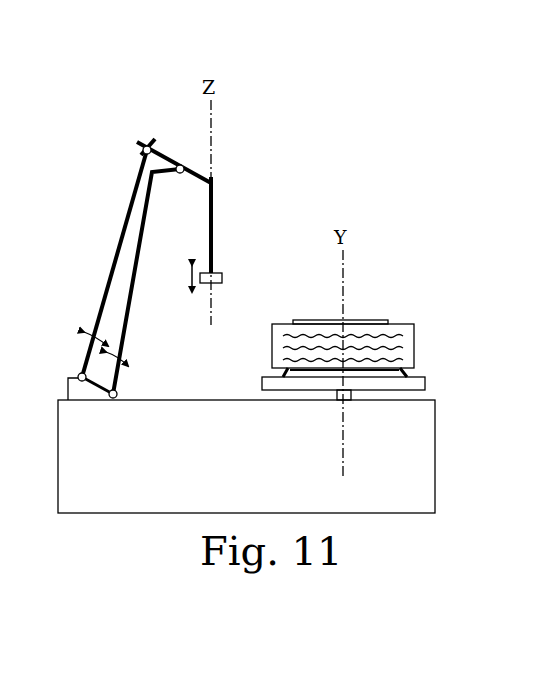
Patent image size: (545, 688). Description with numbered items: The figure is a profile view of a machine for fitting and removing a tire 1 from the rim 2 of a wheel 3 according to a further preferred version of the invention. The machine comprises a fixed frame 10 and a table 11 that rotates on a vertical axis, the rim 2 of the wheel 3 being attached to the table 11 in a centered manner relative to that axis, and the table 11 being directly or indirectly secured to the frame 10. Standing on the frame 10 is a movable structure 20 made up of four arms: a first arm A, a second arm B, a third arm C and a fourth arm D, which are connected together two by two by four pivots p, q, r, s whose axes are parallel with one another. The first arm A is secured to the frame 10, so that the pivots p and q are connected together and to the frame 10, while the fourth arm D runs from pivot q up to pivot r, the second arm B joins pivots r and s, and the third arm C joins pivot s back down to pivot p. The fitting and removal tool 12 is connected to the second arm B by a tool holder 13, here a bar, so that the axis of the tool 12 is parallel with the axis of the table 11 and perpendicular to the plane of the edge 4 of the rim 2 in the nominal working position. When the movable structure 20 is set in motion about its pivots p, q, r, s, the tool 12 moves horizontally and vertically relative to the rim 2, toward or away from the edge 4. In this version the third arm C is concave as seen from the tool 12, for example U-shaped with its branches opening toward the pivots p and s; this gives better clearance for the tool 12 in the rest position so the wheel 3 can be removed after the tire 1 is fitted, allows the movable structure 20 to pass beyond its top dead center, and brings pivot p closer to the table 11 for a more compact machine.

The movable structure 20 is at (78, 136).
The fixed frame 10 is at (433, 478).
The tool holder 13 is at (214, 204).
The fitting and removal tool 12 is at (223, 278).
The table 11 is at (416, 384).
The wheel 3 is at (410, 310).
The tire 1 is at (411, 342).
The rim 2 is at (382, 320).
The edge of the rim 4 is at (300, 320).
The first arm A is at (98, 398).
The second arm B is at (165, 160).
The third arm C is at (132, 290).
The fourth arm D is at (108, 279).
The pivot p is at (117, 392).
The pivot q is at (78, 375).
The pivot r is at (142, 154).
The pivot s is at (181, 174).